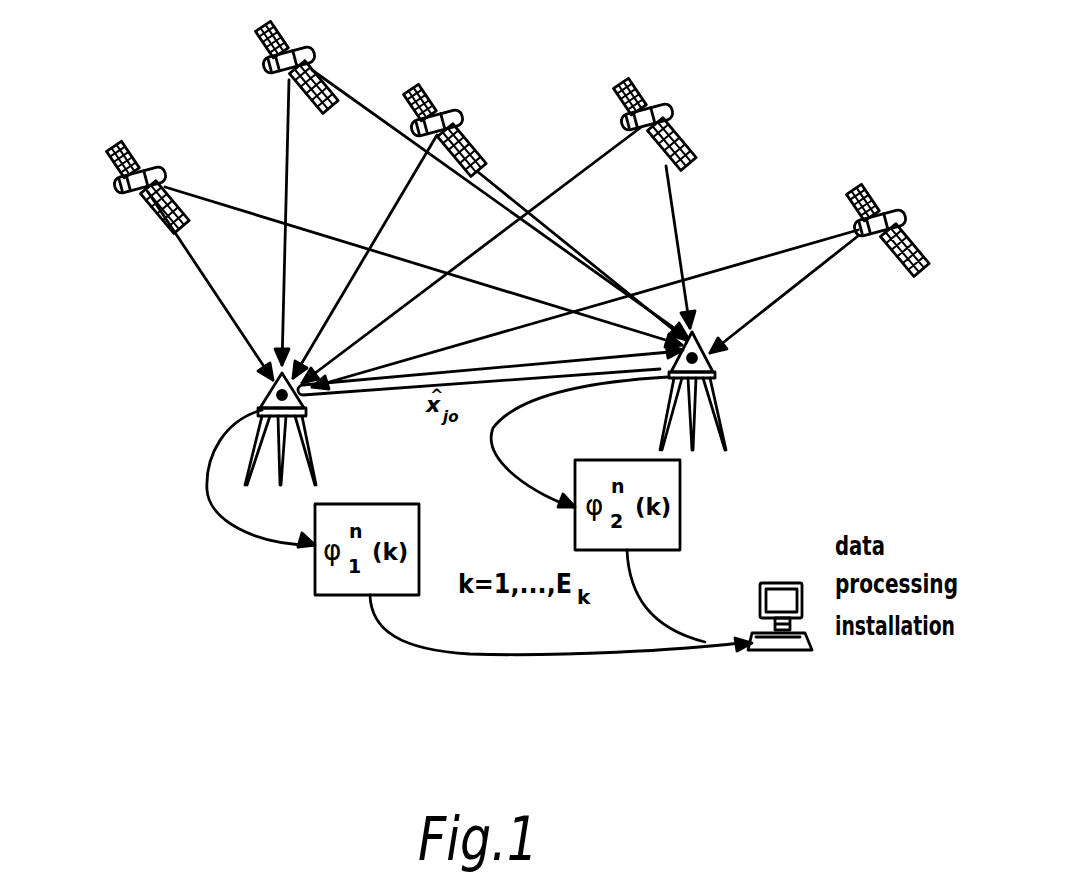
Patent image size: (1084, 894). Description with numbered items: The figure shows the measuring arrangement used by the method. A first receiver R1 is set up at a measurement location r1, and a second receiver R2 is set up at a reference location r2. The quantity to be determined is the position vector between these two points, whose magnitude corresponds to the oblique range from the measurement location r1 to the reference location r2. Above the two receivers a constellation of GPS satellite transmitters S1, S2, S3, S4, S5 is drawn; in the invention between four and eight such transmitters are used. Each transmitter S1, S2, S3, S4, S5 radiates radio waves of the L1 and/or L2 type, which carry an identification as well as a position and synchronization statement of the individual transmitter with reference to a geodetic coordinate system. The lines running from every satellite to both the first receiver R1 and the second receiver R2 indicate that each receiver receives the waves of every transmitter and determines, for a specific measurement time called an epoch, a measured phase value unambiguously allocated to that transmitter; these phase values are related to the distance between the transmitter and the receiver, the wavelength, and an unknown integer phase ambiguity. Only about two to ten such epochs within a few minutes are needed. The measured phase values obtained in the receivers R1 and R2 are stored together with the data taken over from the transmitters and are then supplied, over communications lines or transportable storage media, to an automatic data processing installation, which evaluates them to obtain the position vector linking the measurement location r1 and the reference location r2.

The GPS satellite transmitter S1 is at (388, 237).
The GPS satellite transmitter S2 is at (470, 187).
The GPS satellite transmitter S3 is at (489, 225).
The GPS satellite transmitter S4 is at (503, 225).
The GPS satellite transmitter S5 is at (621, 271).
The first receiver R1 is at (255, 429).
The second receiver R2 is at (718, 391).
The measurement location r1 is at (490, 399).
The reference location r2 is at (579, 442).